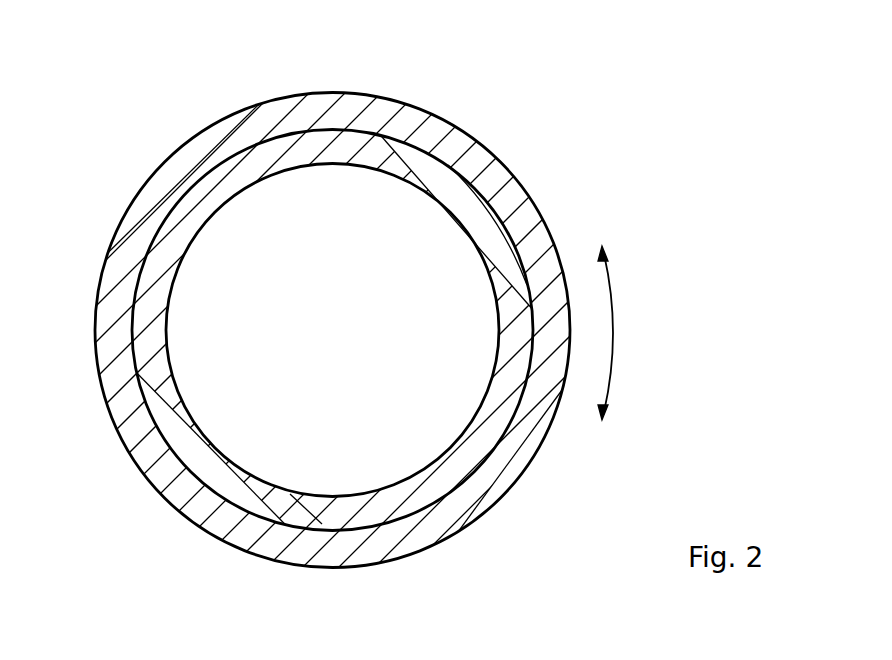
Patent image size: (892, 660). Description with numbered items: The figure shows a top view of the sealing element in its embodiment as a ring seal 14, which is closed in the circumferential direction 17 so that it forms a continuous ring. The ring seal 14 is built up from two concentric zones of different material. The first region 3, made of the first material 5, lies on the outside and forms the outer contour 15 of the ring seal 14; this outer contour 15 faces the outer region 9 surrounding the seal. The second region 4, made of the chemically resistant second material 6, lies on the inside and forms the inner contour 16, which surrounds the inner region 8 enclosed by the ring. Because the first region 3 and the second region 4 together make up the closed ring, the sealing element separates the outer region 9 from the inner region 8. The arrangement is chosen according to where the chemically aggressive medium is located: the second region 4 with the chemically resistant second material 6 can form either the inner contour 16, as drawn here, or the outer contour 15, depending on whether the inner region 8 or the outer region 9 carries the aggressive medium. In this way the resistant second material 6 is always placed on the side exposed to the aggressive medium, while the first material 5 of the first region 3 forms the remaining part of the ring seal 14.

The ring seal 14 is at (134, 147).
The outer contour 15 is at (487, 143).
The inner contour 16 is at (413, 187).
The first region 3 is at (147, 457).
The second region 4 is at (188, 443).
The first material 5 is at (183, 500).
The second material 6 is at (227, 477).
The inner region 8 is at (344, 345).
The outer region 9 is at (40, 345).
The circumferential direction 17 is at (618, 335).